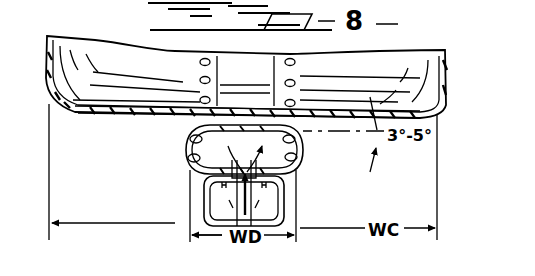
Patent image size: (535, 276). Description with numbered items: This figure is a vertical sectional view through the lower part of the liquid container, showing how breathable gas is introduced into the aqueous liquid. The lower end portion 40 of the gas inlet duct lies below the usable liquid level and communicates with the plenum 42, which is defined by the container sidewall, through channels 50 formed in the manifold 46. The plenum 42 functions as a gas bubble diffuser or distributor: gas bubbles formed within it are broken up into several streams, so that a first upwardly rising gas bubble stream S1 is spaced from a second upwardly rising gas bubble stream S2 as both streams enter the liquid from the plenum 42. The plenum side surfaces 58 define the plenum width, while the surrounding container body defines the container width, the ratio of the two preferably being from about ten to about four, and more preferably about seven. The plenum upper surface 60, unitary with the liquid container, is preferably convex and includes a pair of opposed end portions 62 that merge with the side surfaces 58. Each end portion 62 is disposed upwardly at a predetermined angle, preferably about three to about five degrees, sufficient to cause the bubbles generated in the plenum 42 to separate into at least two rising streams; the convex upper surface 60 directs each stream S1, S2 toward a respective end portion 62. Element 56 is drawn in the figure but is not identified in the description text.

The lower end portion of gas inlet duct 40 is at (100, 0).
The plenum 42 is at (205, 184).
The manifold 46 is at (148, 0).
The channels 50 is at (285, 63).
The central web 56 is at (288, 174).
The plenum side surfaces 58 is at (190, 165).
The plenum upper surface 60 is at (294, 90).
The end portions 62 is at (189, 140).
The first upwardly rising gas bubble stream S1 is at (197, 63).
The second upwardly rising gas bubble stream S2 is at (297, 80).